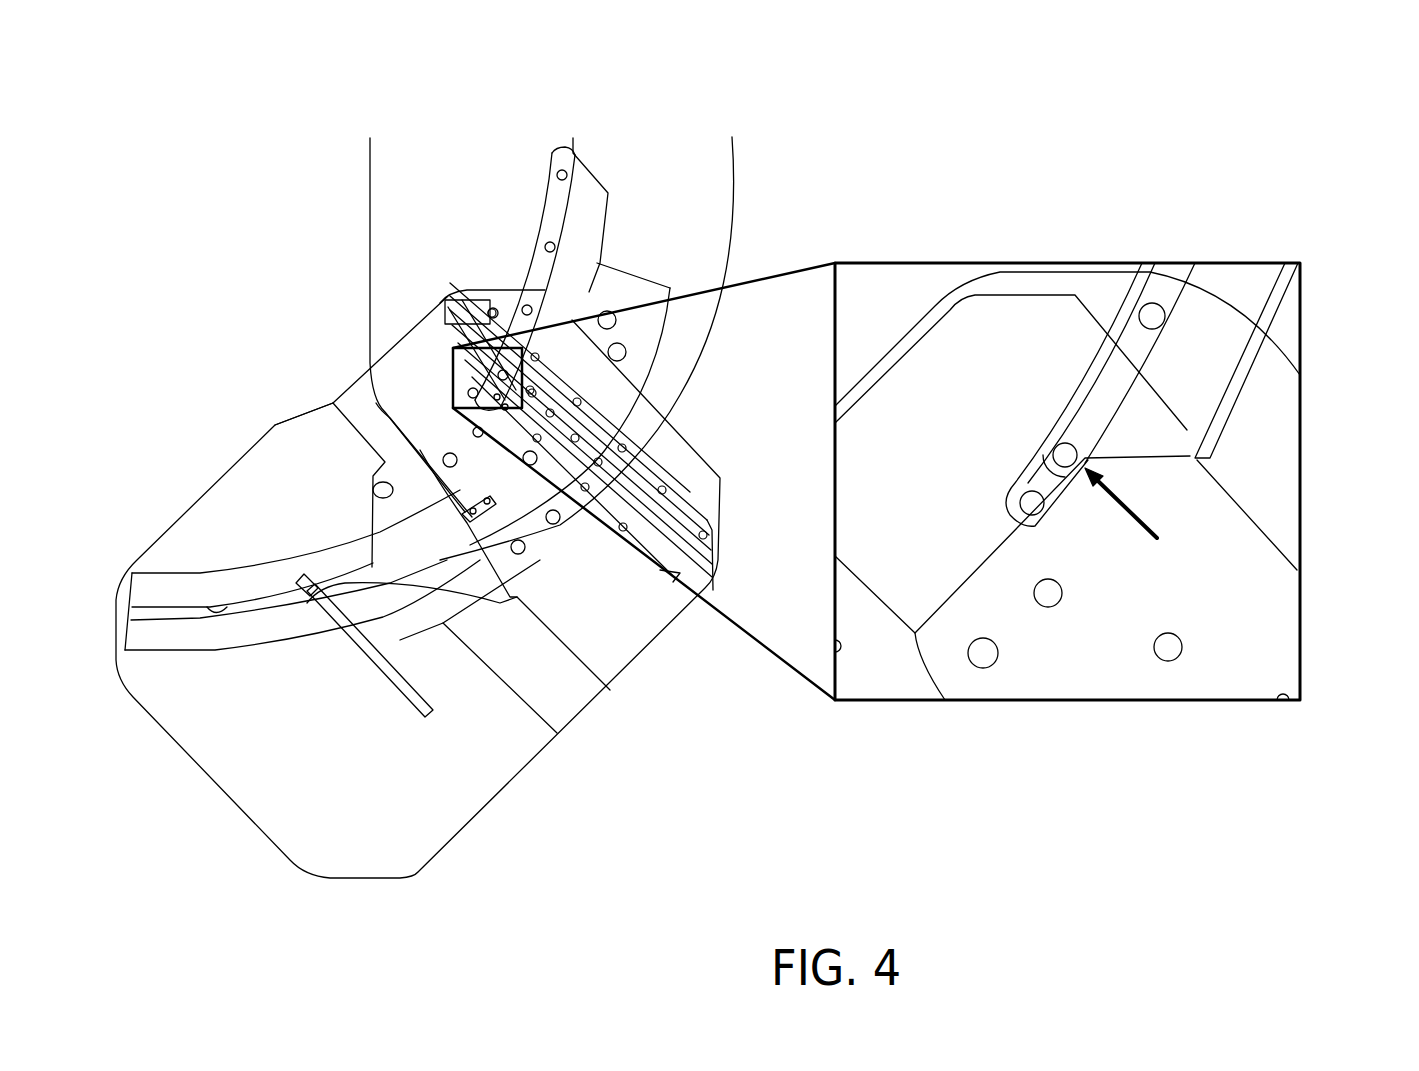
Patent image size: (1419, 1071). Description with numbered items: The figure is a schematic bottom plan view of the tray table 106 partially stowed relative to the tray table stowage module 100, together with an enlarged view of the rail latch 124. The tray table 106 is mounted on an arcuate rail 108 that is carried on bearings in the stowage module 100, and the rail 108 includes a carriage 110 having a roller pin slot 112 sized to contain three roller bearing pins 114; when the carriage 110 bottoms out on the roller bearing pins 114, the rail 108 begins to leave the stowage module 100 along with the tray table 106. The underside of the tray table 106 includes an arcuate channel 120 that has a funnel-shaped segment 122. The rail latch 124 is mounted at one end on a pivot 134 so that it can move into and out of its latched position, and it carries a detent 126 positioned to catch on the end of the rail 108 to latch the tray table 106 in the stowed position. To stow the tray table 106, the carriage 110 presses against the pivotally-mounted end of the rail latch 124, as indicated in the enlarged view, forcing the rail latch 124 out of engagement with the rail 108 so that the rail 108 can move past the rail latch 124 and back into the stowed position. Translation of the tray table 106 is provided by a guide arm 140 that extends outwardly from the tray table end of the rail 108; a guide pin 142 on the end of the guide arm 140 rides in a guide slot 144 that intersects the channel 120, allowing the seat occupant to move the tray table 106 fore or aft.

The tray table stowage module 100 is at (450, 168).
The tray table 106 is at (453, 777).
The arcuate rail 108 is at (640, 323).
The carriage 110 is at (617, 623).
The roller pin slot 112 is at (377, 540).
The roller bearing pins 114 is at (373, 405).
The arcuate channel 120 is at (207, 610).
The funnel-shaped segment 122 is at (372, 502).
The rail latch 124 is at (583, 230).
The detent 126 is at (600, 262).
The pivot 134 is at (447, 300).
The guide arm 140 is at (557, 733).
The guide pin 142 is at (365, 655).
The guide slot 144 is at (400, 640).